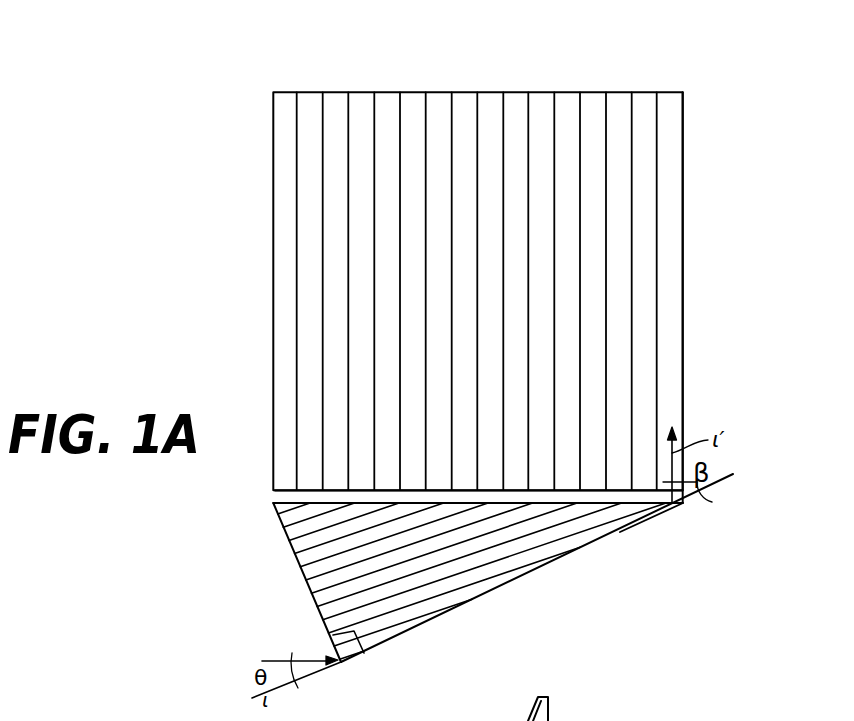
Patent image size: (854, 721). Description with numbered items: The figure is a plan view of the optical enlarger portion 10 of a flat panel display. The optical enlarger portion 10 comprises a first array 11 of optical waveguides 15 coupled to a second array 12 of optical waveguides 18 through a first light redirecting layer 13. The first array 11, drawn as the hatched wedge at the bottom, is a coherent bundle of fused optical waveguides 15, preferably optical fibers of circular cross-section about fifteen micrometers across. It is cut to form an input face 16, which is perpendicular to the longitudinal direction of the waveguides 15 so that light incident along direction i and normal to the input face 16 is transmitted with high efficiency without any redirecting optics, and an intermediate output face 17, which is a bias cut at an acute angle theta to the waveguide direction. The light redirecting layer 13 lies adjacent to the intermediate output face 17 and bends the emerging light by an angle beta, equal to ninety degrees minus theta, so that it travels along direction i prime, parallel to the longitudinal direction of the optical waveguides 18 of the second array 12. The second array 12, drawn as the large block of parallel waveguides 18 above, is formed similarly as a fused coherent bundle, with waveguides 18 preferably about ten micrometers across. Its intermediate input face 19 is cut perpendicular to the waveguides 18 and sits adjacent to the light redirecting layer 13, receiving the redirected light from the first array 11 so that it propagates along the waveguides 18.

The optical enlarger portion 10 is at (500, 84).
The first array 11 is at (520, 580).
The second array 12 is at (684, 262).
The first light redirecting layer 13 is at (283, 497).
The optical waveguides 15 is at (418, 627).
The input face 16 is at (303, 573).
The intermediate output face 17 is at (322, 503).
The optical waveguides 18 is at (283, 232).
The intermediate input face 19 is at (598, 491).